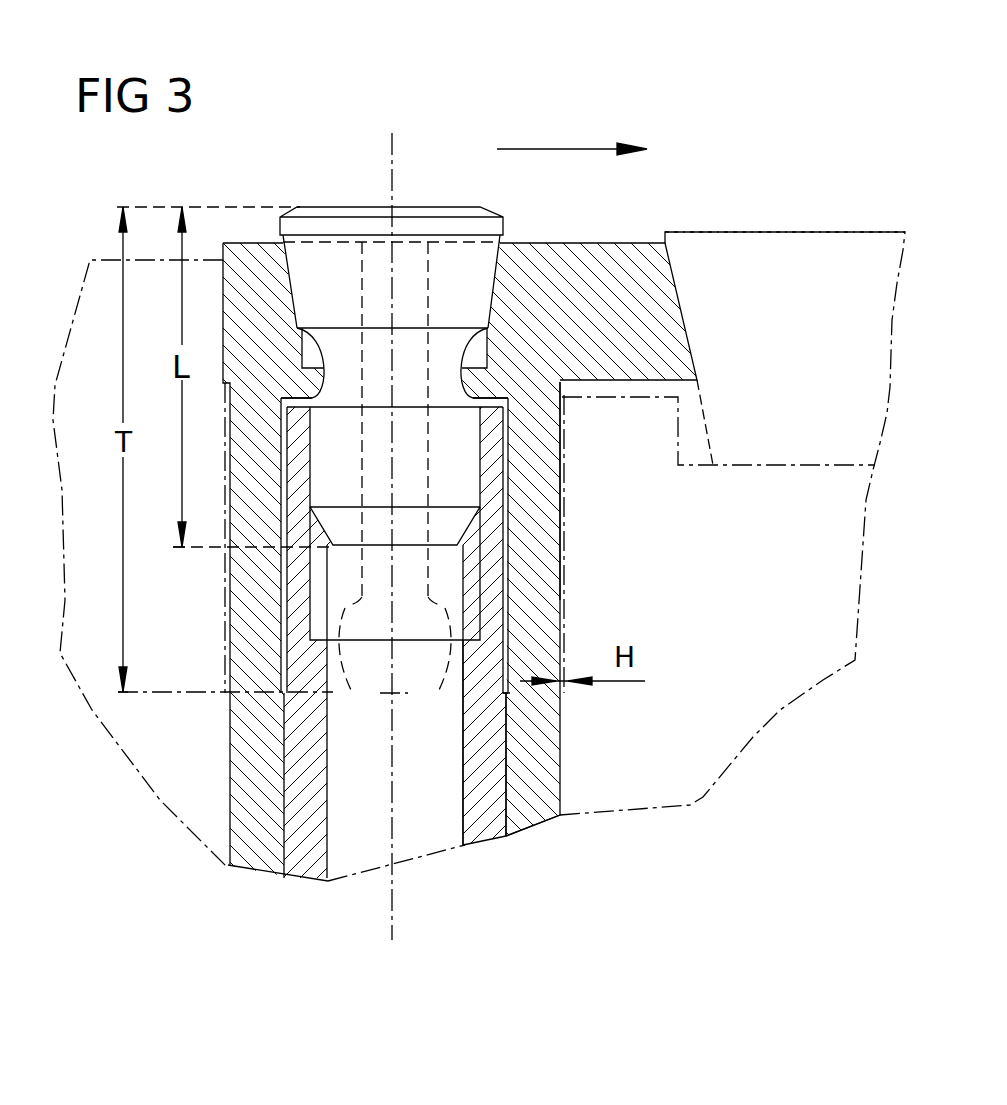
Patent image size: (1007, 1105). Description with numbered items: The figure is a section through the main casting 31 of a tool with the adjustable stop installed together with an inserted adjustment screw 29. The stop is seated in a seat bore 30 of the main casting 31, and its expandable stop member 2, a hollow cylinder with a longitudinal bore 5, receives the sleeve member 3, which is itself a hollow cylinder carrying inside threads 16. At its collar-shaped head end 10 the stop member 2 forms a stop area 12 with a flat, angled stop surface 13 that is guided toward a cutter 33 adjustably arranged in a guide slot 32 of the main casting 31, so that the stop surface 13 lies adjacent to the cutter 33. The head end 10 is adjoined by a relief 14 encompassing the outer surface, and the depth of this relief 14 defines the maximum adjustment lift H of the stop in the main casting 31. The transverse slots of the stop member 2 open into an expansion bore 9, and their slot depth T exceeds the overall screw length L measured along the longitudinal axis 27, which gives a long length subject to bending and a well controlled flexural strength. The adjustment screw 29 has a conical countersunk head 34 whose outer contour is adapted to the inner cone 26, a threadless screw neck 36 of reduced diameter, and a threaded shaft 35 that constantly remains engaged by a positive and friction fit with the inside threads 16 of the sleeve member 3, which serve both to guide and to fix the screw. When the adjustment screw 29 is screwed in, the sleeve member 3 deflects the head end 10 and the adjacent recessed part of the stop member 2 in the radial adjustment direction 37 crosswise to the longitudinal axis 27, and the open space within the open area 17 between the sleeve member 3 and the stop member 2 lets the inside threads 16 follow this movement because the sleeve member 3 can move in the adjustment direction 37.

The stop member 2 is at (537, 795).
The sleeve member 3 is at (483, 813).
The longitudinal bore 5 is at (368, 862).
The expansion bore 9 is at (348, 682).
The head end 10 is at (542, 240).
The stop area 12 is at (608, 398).
The stop surface 13 is at (665, 263).
The relief 14 is at (562, 527).
The inside threads 16 is at (463, 662).
The open area 17 is at (505, 568).
The inner cone 26 is at (502, 278).
The longitudinal axis 27 is at (392, 165).
The adjustment screw 29 is at (323, 225).
The seat bore 30 is at (563, 682).
The main casting 31 is at (738, 780).
The guide slot 32 is at (693, 465).
The cutter 33 is at (787, 257).
The countersunk head 34 is at (467, 298).
The threaded shaft 35 is at (440, 465).
The screw neck 36 is at (440, 350).
The adjustment direction 37 is at (563, 149).